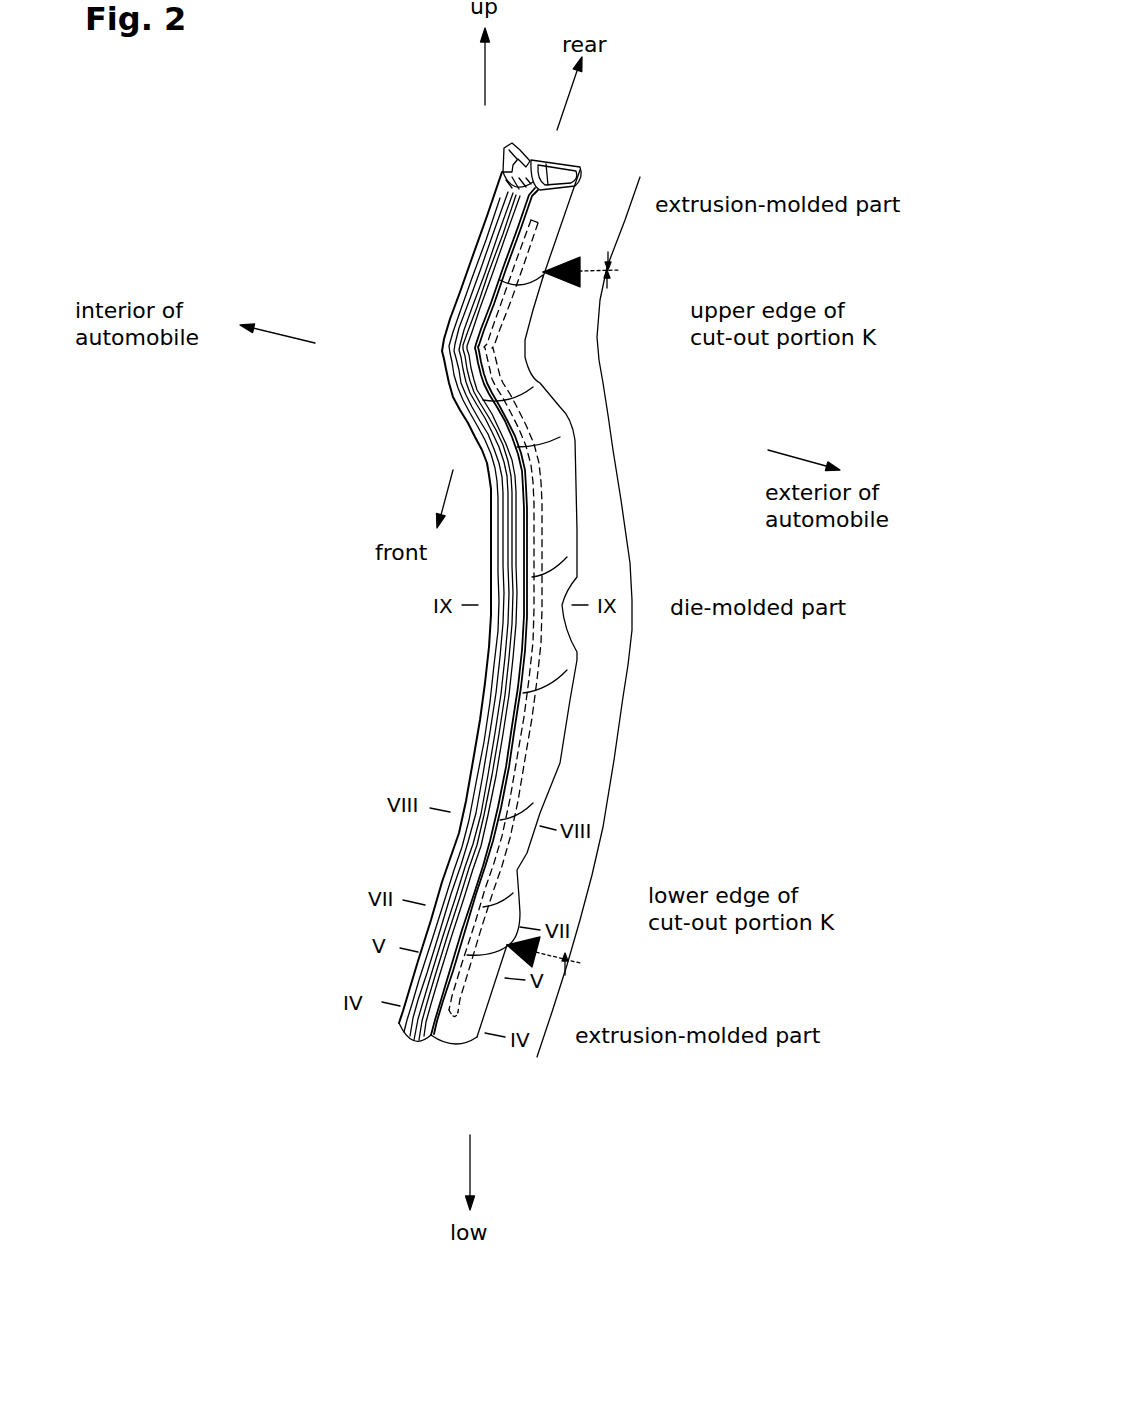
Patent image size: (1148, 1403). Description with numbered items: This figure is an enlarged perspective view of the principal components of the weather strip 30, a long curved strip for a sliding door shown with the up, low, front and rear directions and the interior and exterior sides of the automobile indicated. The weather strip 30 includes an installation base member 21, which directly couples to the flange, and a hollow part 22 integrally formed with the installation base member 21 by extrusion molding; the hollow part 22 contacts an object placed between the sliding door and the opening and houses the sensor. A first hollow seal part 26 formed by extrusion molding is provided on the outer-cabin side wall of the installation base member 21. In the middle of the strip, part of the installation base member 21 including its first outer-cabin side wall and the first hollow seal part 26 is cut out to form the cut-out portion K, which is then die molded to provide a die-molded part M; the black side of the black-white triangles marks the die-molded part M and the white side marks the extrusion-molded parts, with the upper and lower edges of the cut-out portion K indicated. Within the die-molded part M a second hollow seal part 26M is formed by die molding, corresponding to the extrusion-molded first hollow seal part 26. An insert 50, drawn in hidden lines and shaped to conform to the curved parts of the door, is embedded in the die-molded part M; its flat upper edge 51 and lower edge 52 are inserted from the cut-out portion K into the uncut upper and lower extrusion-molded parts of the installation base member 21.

The installation base member 21 is at (500, 160).
The upper edge 51 is at (495, 212).
The first hollow seal part 26 is at (560, 202).
The hollow part 22 is at (443, 343).
The second hollow seal part 26M is at (560, 480).
The insert 50 is at (540, 512).
The weather strip 30 is at (487, 658).
The die-molded part M is at (540, 758).
The lower edge 52 is at (455, 1015).